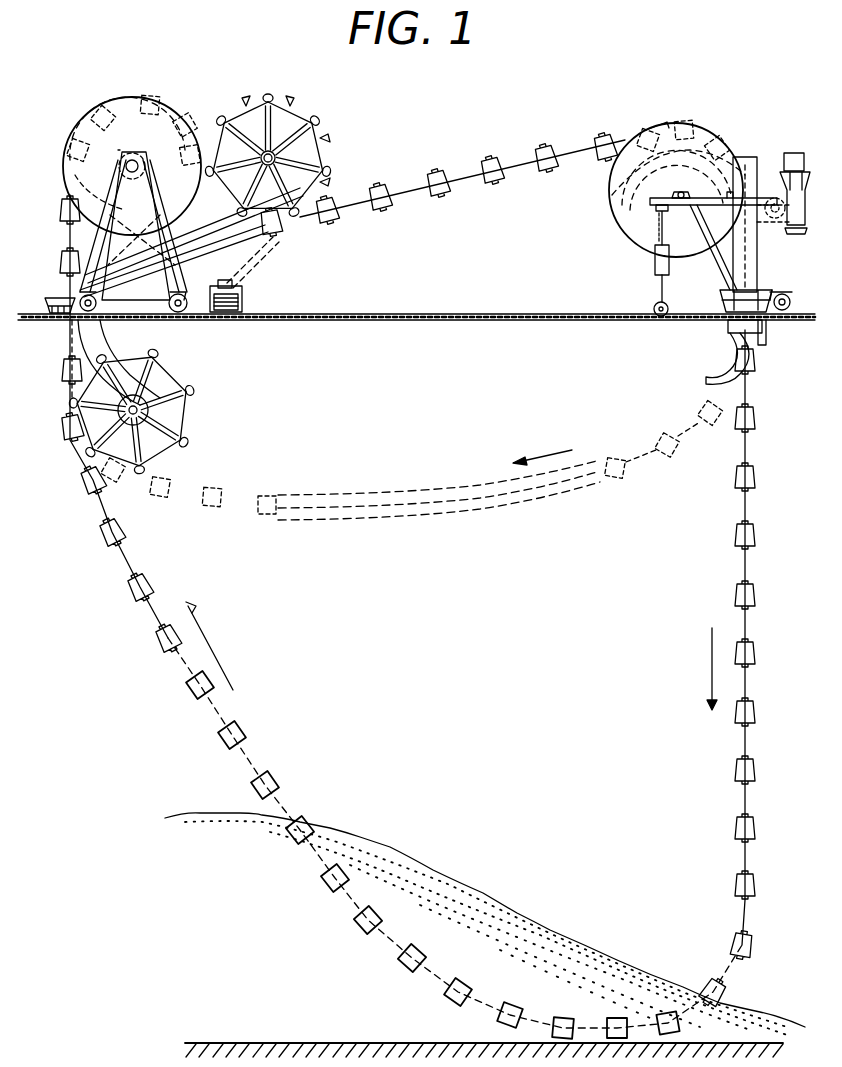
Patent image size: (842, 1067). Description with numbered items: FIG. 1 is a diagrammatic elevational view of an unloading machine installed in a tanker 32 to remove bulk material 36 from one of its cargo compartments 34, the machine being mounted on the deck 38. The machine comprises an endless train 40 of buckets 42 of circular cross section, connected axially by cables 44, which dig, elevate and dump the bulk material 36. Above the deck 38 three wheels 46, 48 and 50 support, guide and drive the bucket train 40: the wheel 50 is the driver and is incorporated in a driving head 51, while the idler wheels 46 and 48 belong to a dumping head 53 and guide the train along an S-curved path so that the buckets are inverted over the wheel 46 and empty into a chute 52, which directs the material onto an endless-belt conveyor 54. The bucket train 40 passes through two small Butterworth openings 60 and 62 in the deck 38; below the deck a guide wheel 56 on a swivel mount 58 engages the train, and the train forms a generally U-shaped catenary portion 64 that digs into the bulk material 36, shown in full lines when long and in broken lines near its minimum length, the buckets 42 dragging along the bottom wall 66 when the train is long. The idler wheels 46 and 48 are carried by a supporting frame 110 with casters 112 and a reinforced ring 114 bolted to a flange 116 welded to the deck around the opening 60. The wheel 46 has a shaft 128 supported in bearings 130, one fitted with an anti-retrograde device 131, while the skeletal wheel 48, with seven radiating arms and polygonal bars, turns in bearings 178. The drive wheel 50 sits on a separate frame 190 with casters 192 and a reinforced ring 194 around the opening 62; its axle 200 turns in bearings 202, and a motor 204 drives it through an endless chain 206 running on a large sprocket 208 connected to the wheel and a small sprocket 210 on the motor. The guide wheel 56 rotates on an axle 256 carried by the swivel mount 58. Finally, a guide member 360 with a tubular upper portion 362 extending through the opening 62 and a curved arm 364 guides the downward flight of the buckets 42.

The tanker 32 is at (514, 270).
The cargo compartment 34 is at (383, 360).
The bulk material 36 is at (412, 856).
The deck 38 is at (555, 314).
The endless train of buckets 40 is at (419, 574).
The buckets 42 is at (490, 165).
The cables 44 is at (528, 175).
The first idler wheel 46 is at (130, 125).
The second idler wheel 48 is at (248, 99).
The drive wheel 50 is at (695, 114).
The driving head 51 is at (732, 92).
The chute 52 is at (265, 265).
The dumping head 53 is at (97, 76).
The conveyor 54 is at (244, 290).
The guide wheel 56 is at (184, 375).
The swivel mount 58 is at (92, 326).
The opening 60 is at (62, 327).
The opening 62 is at (758, 338).
The catenary portion 64 is at (398, 494).
The bottom wall 66 is at (282, 1043).
The supporting frame 110 is at (108, 186).
The casters 112 is at (168, 305).
The reinforced ring 114 is at (70, 298).
The bolt-receiving flange 116 is at (50, 310).
The shaft 128 is at (120, 160).
The bearings 130 is at (185, 140).
The anti-retrograde device 131 is at (72, 170).
The bearings 178 is at (272, 156).
The frame 190 is at (640, 225).
The casters 192 is at (654, 310).
The reinforced ring 194 is at (724, 300).
The axle 200 is at (684, 192).
The bearings 202 is at (650, 204).
The motor 204 is at (795, 150).
The endless chain 206 is at (735, 178).
The large sprocket 208 is at (628, 188).
The small sprocket 210 is at (772, 222).
The axle 256 is at (148, 410).
The guide member 360 is at (726, 326).
The tubular upper portion 362 is at (764, 330).
The curved arm 364 is at (705, 377).